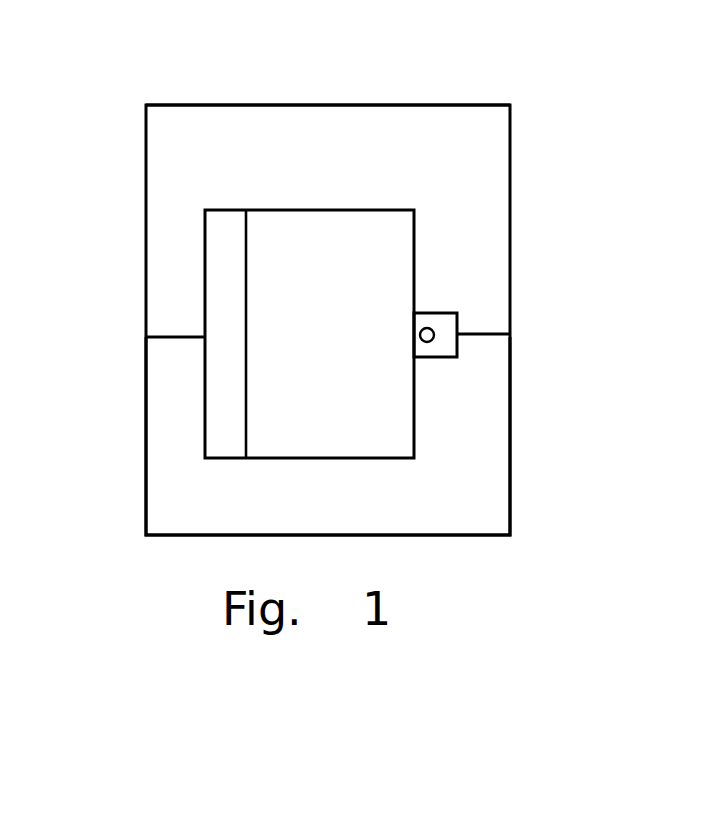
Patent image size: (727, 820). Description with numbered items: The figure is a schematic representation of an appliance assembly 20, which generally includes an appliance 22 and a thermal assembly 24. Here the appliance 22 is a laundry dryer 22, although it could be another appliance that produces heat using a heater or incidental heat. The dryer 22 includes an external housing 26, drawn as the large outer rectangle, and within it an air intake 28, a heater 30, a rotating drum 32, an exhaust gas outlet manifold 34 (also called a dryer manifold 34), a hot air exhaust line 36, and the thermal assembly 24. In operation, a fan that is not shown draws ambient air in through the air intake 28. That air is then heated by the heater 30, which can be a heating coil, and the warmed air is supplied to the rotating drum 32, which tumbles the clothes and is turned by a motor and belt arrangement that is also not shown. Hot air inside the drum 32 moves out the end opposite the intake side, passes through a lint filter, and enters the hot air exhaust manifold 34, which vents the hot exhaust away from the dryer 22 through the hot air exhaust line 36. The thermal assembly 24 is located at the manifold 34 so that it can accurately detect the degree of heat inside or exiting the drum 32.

The appliance assembly 20 is at (199, 68).
The appliance 22 is at (345, 90).
The thermal assembly 24 is at (432, 327).
The external housing 26 is at (146, 422).
The air intake 28 is at (172, 334).
The heater 30 is at (225, 210).
The rotating drum 32 is at (368, 210).
The exhaust gas outlet manifold 34 is at (447, 353).
The hot air exhaust line 36 is at (487, 333).